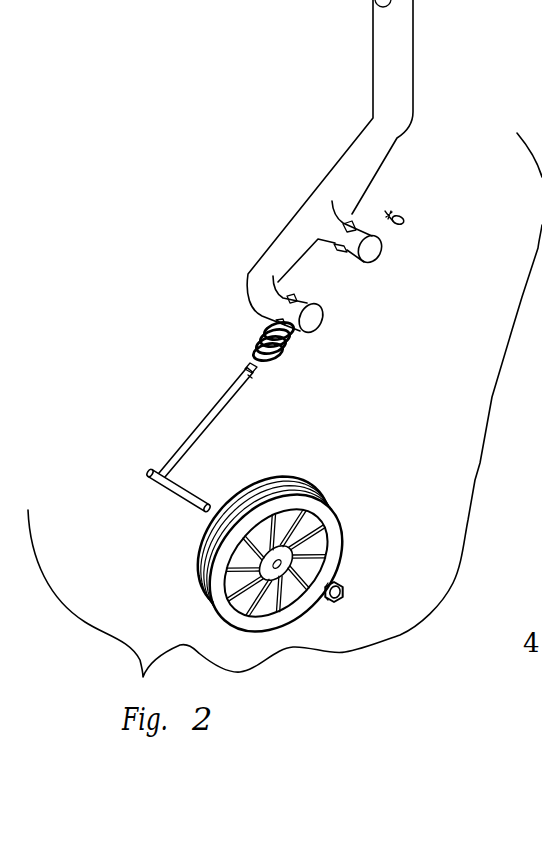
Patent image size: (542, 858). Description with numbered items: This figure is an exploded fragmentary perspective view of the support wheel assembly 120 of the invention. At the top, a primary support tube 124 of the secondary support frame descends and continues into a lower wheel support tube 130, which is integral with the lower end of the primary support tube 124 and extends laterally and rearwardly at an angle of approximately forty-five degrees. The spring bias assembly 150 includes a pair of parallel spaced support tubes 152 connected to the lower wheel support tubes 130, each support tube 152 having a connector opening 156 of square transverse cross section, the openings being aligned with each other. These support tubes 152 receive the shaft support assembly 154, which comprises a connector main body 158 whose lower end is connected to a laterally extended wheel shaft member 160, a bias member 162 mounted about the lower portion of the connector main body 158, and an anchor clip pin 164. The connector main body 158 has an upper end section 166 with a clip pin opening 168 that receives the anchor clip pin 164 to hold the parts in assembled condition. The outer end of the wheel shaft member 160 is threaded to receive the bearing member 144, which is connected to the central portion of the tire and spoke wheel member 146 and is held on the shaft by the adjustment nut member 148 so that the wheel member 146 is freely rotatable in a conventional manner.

The support wheel assembly 120 is at (427, 268).
The primary support tube 124 is at (403, 55).
The lower wheel support tube 130 is at (373, 152).
The bearing member 144 is at (318, 540).
The tire and spoke wheel member 146 is at (335, 503).
The adjustment nut member 148 is at (340, 582).
The spring bias assembly 150 is at (303, 377).
The support tube 152 is at (376, 250).
The shaft support assembly 154 is at (148, 497).
The connector opening 156 is at (360, 207).
The connector main body 158 is at (277, 420).
The wheel shaft member 160 is at (192, 507).
The bias member 162 is at (286, 352).
The anchor clip pin 164 is at (404, 213).
The upper end section 166 is at (254, 386).
The clip pin opening 168 is at (252, 380).